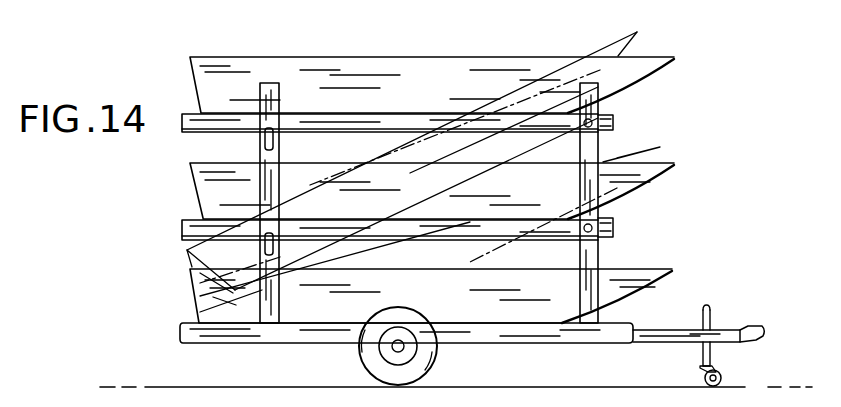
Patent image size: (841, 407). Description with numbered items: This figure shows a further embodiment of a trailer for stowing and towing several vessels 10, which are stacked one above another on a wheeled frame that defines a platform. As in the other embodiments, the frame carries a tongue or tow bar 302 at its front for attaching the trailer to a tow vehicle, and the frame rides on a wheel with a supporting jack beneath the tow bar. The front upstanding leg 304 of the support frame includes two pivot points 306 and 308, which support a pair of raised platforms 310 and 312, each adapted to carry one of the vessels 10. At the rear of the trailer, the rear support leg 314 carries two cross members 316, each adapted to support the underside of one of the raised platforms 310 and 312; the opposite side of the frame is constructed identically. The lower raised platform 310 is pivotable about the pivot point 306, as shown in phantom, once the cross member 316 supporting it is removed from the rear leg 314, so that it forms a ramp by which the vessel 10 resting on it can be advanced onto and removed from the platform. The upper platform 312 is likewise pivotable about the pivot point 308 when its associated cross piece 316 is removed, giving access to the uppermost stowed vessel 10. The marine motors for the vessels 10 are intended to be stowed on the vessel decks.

The vessel 10 is at (561, 55).
The tongue or tow bar 302 is at (733, 330).
The front upstanding leg 304 is at (599, 256).
The pivot point 306 is at (612, 213).
The pivot point 308 is at (613, 118).
The raised platform 310 is at (468, 241).
The raised platform 312 is at (388, 121).
The rear support leg 314 is at (270, 84).
The cross member 316 is at (264, 138).